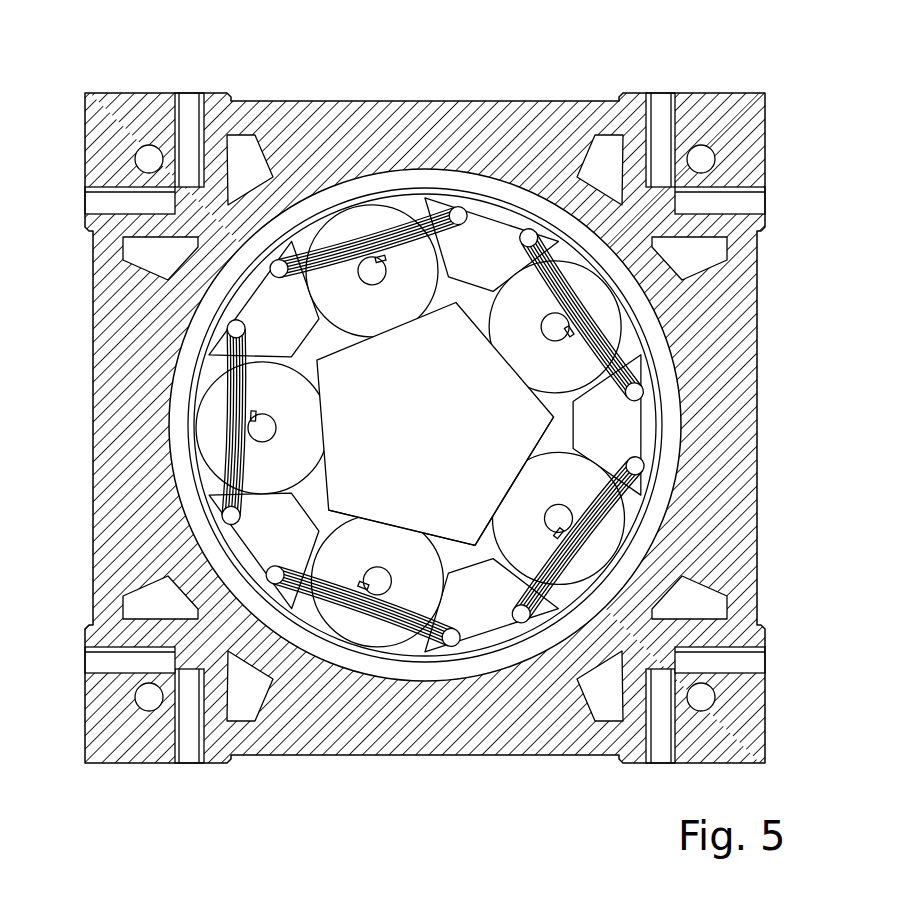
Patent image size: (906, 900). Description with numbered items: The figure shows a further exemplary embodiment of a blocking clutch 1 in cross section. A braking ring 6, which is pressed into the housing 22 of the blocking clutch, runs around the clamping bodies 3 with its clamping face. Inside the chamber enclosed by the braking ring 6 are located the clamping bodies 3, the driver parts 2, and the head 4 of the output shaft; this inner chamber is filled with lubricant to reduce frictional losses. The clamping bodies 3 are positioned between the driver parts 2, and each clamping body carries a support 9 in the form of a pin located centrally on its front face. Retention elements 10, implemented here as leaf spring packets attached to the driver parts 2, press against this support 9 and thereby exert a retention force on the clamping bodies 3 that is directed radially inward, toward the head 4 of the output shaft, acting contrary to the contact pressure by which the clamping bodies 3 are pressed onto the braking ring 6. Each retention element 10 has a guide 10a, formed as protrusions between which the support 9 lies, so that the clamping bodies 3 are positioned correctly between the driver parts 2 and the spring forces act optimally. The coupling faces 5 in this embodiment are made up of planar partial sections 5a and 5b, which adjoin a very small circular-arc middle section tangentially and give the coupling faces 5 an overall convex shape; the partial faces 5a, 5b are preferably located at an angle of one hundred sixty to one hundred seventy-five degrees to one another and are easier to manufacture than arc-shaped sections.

The blocking clutch 1 is at (570, 88).
The driver parts 2 is at (262, 312).
The clamping bodies 3 is at (355, 623).
The head of the output shaft 4 is at (412, 444).
The coupling faces 5 is at (462, 553).
The planar partial section of coupling face 5a is at (487, 548).
The planar partial section of coupling face 5b is at (556, 441).
The braking ring 6 is at (300, 642).
The support 9 is at (371, 270).
The retention elements 10 is at (612, 507).
The guide 10a is at (578, 505).
The housing 22 is at (578, 723).